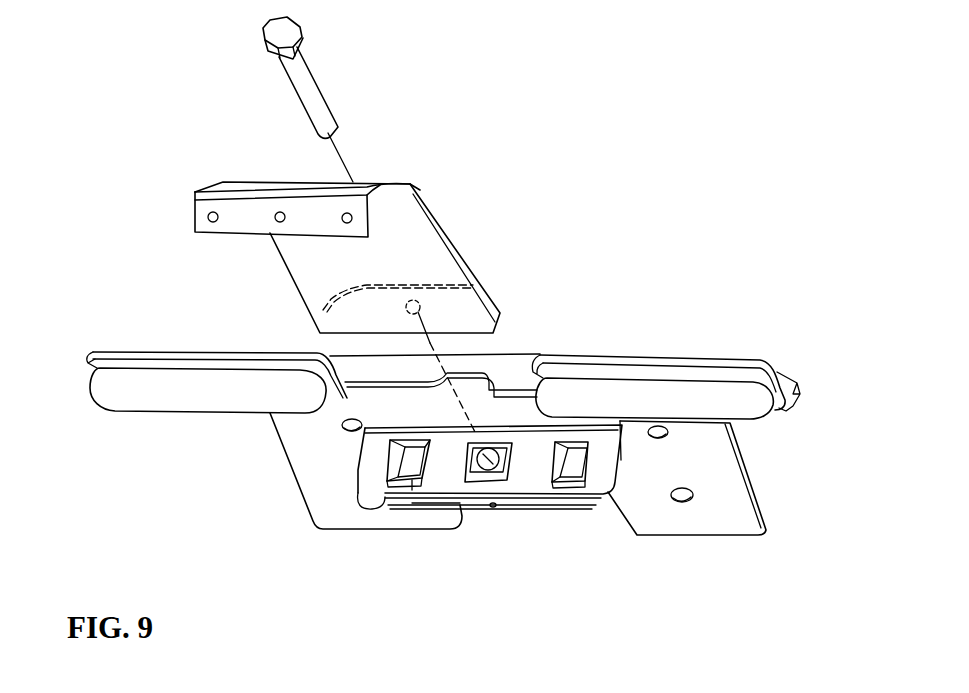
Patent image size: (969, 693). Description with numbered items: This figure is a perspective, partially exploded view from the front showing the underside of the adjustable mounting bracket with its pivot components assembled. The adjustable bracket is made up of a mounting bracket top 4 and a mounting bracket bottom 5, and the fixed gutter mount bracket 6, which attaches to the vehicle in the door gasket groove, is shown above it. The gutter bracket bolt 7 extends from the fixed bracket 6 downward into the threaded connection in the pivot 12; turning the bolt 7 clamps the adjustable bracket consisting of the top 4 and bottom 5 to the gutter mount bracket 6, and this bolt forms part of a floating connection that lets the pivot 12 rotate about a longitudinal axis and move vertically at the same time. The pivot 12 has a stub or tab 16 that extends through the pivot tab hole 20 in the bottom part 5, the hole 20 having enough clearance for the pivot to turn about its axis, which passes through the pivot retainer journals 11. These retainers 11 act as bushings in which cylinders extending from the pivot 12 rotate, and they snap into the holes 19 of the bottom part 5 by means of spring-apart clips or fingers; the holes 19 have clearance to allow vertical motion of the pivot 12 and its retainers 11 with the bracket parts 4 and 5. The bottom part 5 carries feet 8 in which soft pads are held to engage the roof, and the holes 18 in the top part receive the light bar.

The mounting bracket top 4 is at (513, 373).
The mounting bracket bottom 5 is at (443, 479).
The gutter mount bracket 6 is at (325, 275).
The gutter bracket bolt 7 is at (280, 77).
The feet 8 is at (143, 390).
The pivot retainer journals 11 is at (392, 465).
The pivot 12 is at (520, 510).
The tab 16 is at (485, 479).
The holes 18 is at (683, 500).
The holes 19 is at (412, 485).
The pivot tab hole 20 is at (474, 487).